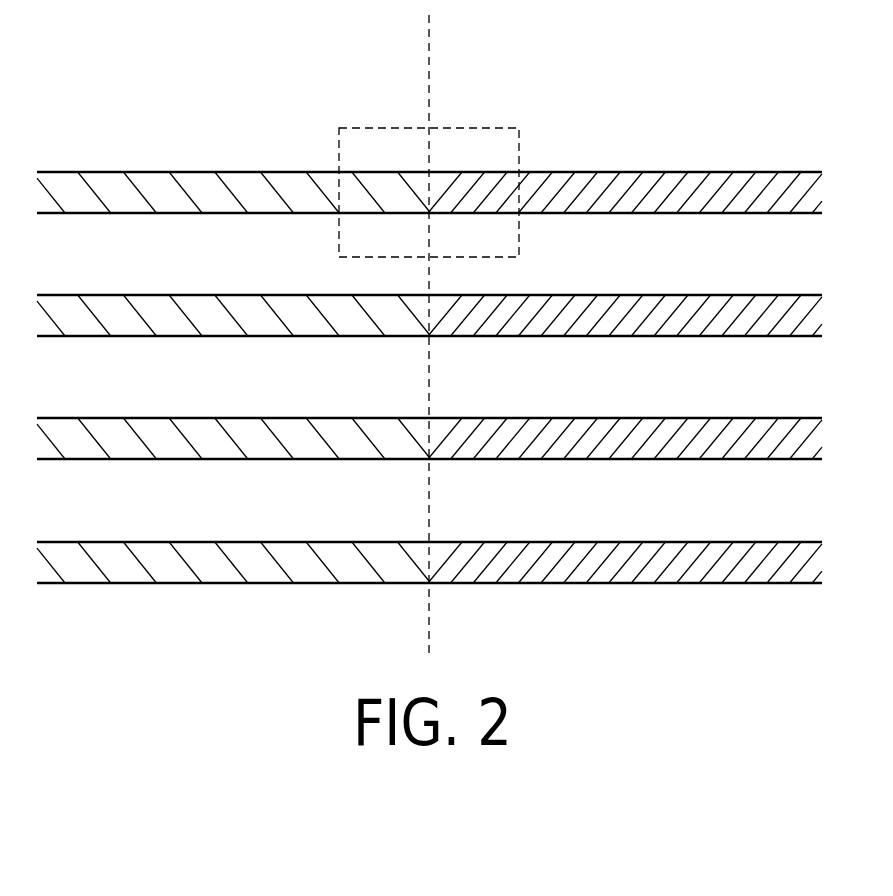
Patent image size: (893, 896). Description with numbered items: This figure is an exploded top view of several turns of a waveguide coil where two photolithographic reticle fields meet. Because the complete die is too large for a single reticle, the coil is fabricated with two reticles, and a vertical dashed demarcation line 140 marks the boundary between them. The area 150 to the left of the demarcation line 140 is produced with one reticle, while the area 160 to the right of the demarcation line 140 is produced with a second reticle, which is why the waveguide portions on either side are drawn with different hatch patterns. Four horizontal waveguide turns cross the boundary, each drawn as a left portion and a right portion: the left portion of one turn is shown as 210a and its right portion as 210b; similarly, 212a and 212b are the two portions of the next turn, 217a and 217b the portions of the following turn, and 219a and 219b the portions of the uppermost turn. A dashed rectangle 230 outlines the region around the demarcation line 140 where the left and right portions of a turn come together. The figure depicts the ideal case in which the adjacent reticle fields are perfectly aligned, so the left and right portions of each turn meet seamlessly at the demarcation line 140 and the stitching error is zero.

The demarcation line 140 is at (433, 71).
The area to the left of the demarcation line 150 is at (191, 119).
The area to the right of the demarcation line 160 is at (675, 119).
The interface region 230 is at (378, 127).
The left portion of turn 119 219a is at (234, 223).
The right portion of turn 119 219b is at (625, 223).
The left portion of turn 117 217a is at (234, 346).
The right portion of turn 117 217b is at (625, 346).
The left portion of turn 112 212a is at (234, 469).
The right portion of turn 112 212b is at (625, 469).
The left portion of turn 110 210a is at (234, 593).
The right portion of turn 110 210b is at (625, 593).